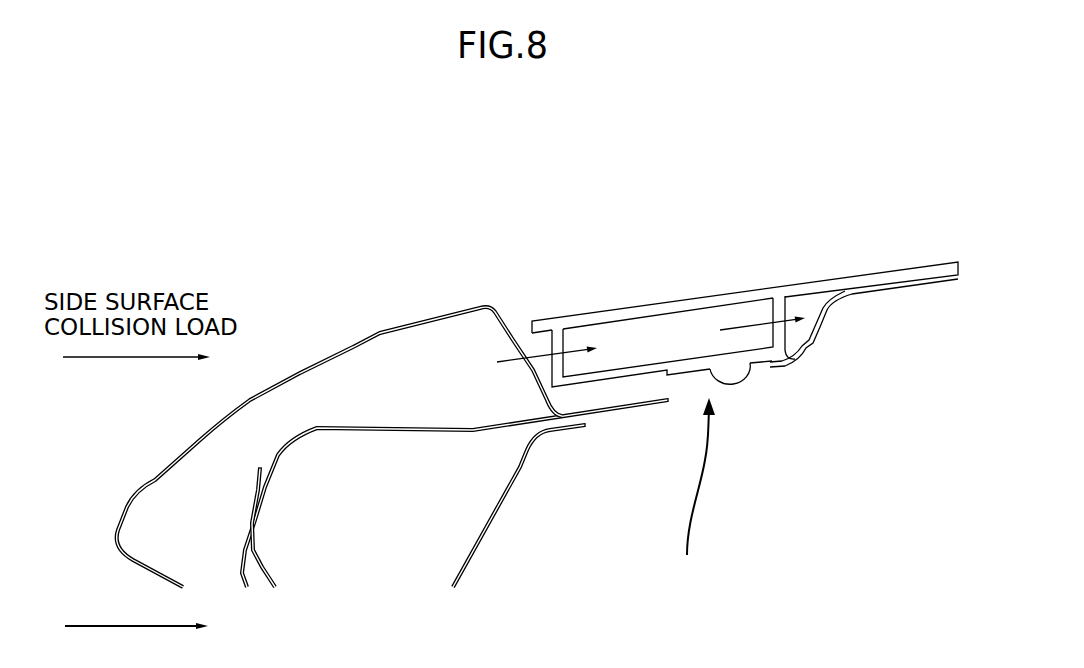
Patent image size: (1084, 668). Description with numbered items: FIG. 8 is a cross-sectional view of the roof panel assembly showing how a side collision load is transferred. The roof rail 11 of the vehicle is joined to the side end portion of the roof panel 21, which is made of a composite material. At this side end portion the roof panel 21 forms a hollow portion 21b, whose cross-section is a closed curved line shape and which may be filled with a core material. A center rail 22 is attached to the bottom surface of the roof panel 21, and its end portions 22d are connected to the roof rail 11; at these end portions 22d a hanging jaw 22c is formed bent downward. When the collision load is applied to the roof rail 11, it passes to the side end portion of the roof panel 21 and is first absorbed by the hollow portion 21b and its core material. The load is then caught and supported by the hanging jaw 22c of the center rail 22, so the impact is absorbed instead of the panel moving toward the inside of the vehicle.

The roof rail 11 is at (380, 333).
The roof panel 21 is at (807, 290).
The hollow portion 21b is at (658, 335).
The center rail 22 is at (905, 288).
The hanging jaw 22c is at (774, 363).
The end portions 22d is at (691, 493).